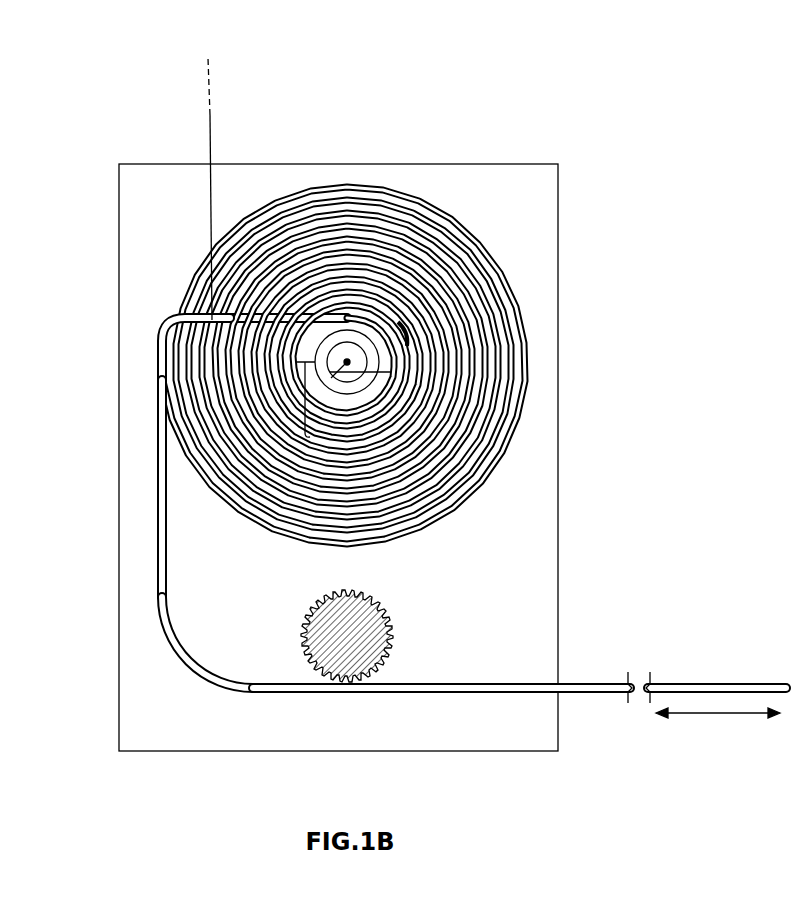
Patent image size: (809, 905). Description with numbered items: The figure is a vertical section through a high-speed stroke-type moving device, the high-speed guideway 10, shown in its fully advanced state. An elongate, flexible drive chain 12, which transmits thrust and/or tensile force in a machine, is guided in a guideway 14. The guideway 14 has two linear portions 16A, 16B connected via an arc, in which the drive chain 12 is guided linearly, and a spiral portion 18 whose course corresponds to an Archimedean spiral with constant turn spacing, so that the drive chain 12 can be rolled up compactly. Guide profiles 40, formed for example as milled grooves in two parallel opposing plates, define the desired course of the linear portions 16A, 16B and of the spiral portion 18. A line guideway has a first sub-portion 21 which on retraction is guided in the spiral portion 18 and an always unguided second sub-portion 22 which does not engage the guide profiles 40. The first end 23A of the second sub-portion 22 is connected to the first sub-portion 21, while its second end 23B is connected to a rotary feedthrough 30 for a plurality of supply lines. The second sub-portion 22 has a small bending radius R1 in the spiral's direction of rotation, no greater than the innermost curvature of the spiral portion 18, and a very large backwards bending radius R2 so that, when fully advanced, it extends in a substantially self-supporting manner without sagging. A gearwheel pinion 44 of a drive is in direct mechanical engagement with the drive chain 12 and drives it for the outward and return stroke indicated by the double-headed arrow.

The high-speed guideway 10 is at (367, 393).
The drive chain 12 is at (515, 683).
The guideway 14 is at (527, 291).
The linear portion 16A is at (148, 370).
The second straight tape segment 16B is at (263, 704).
The spiral portion 18 is at (90, 185).
The first sub-portion 21 is at (169, 543).
The second sub-portion 22 is at (389, 327).
The first end 23A is at (162, 339).
The second end 23B is at (340, 449).
The rotary feedthrough 30 is at (331, 321).
The guide profiles 40 is at (490, 378).
The gearwheel pinion 44 is at (343, 635).
The bending radius R1 is at (404, 322).
The backwards bending radius R2 is at (211, 146).